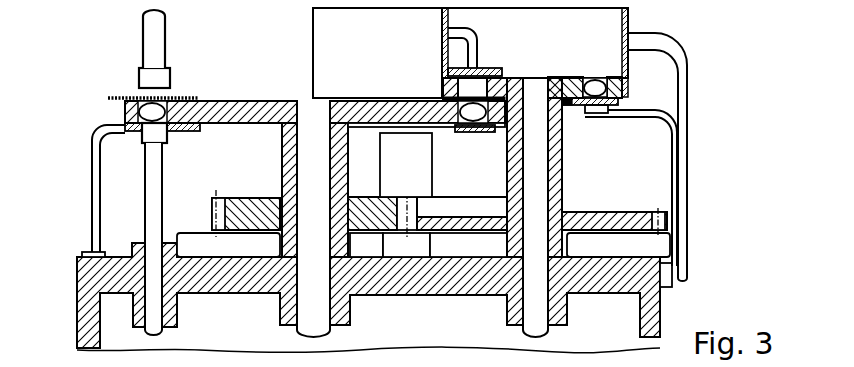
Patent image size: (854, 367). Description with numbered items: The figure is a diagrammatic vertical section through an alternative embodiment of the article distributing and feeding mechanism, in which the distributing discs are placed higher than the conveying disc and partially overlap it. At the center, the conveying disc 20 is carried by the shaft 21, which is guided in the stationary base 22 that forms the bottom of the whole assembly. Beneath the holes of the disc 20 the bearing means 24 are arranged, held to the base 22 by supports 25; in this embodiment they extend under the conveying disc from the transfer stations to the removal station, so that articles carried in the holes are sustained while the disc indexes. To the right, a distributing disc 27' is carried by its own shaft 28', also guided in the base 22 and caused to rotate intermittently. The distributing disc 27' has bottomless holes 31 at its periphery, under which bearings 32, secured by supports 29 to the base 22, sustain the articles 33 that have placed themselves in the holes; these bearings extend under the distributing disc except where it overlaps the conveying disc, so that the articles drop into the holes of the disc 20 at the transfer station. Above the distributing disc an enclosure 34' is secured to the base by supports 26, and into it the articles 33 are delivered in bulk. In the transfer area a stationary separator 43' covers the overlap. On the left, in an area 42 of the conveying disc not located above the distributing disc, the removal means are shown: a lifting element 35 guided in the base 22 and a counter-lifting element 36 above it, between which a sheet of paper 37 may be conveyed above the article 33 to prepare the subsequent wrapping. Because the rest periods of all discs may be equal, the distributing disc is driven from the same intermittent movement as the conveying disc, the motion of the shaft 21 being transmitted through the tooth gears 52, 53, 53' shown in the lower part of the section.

The disc 20 is at (232, 102).
The shaft 21 is at (318, 303).
The stationary base 22 is at (82, 272).
The bearing means 24 is at (176, 131).
The supports 25 is at (93, 198).
The supports 26 is at (680, 144).
The distributing disc 27' is at (585, 56).
The shaft 28' is at (502, 207).
The supports 29 is at (648, 118).
The bottomless holes 31 is at (592, 74).
The bearings 32 is at (570, 107).
The articles 33 is at (148, 113).
The enclosure 34' is at (565, 51).
The lifting element 35 is at (146, 189).
The counter-lifting element 36 is at (165, 35).
The sheet of paper 37 is at (113, 95).
The area 42 is at (176, 83).
The stationary separator 43' is at (484, 49).
The tooth gear 52 is at (240, 198).
The tooth gear 53 is at (427, 185).
The tooth gear 53' is at (614, 210).